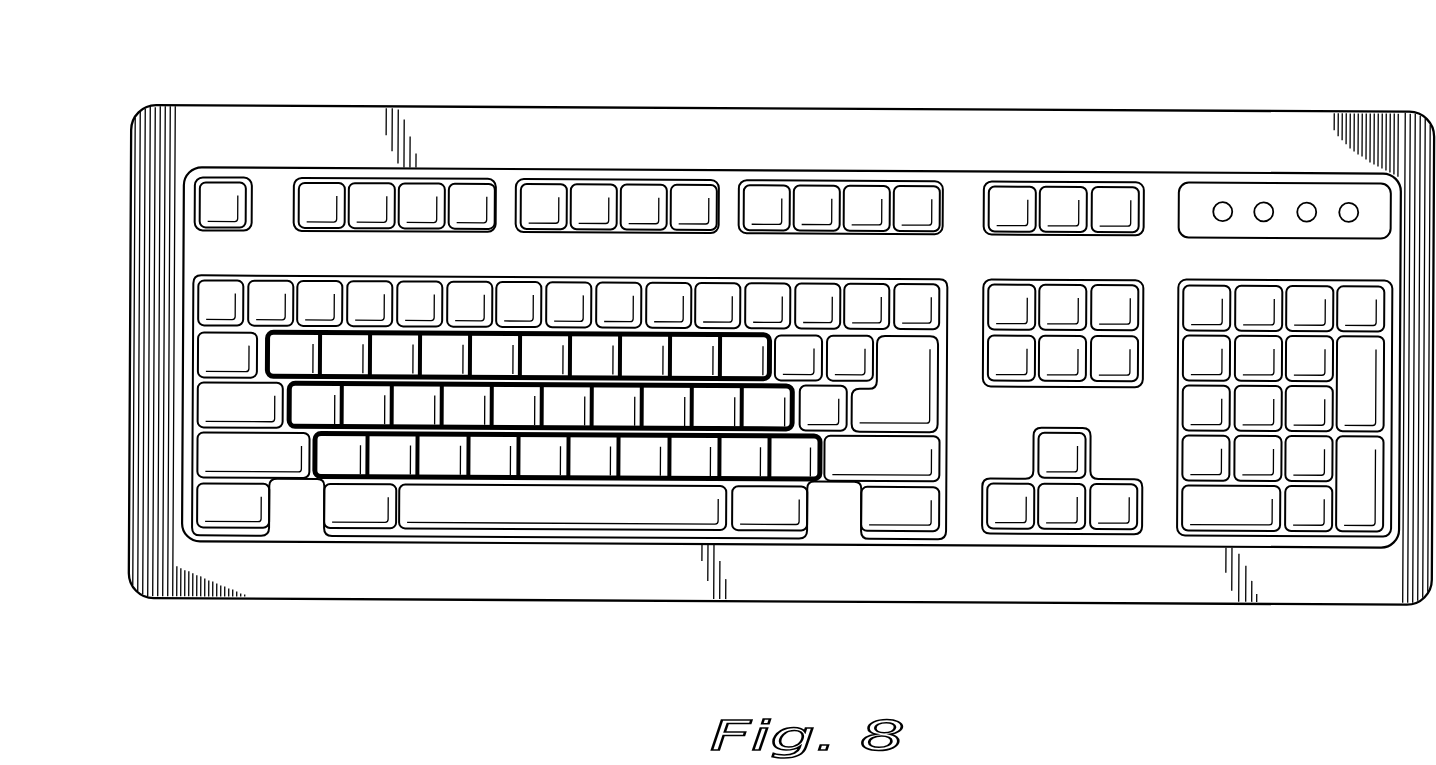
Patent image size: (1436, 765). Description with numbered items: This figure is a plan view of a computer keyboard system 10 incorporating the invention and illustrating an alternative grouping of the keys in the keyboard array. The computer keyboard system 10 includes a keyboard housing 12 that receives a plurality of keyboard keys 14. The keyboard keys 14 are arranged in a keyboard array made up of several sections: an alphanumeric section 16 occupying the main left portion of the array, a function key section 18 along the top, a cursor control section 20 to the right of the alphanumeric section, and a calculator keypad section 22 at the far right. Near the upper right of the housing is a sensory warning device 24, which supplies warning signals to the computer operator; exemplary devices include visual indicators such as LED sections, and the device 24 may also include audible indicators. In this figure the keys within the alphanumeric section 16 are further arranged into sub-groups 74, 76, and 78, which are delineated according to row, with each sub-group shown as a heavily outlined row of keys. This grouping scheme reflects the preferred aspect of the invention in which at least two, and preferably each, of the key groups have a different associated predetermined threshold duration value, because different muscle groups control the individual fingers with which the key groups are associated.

The computer keyboard system 10 is at (782, 339).
The keyboard housing 12 is at (1158, 130).
The keyboard keys 14 is at (913, 196).
The alphanumeric section 16 is at (840, 560).
The function key section 18 is at (626, 140).
The cursor control section 20 is at (1060, 560).
The calculator keypad section 22 is at (1308, 562).
The sensory warning device 24 is at (1303, 170).
The sub-group of keys 74 is at (282, 325).
The sub-group of keys 76 is at (292, 410).
The sub-group of keys 78 is at (318, 460).